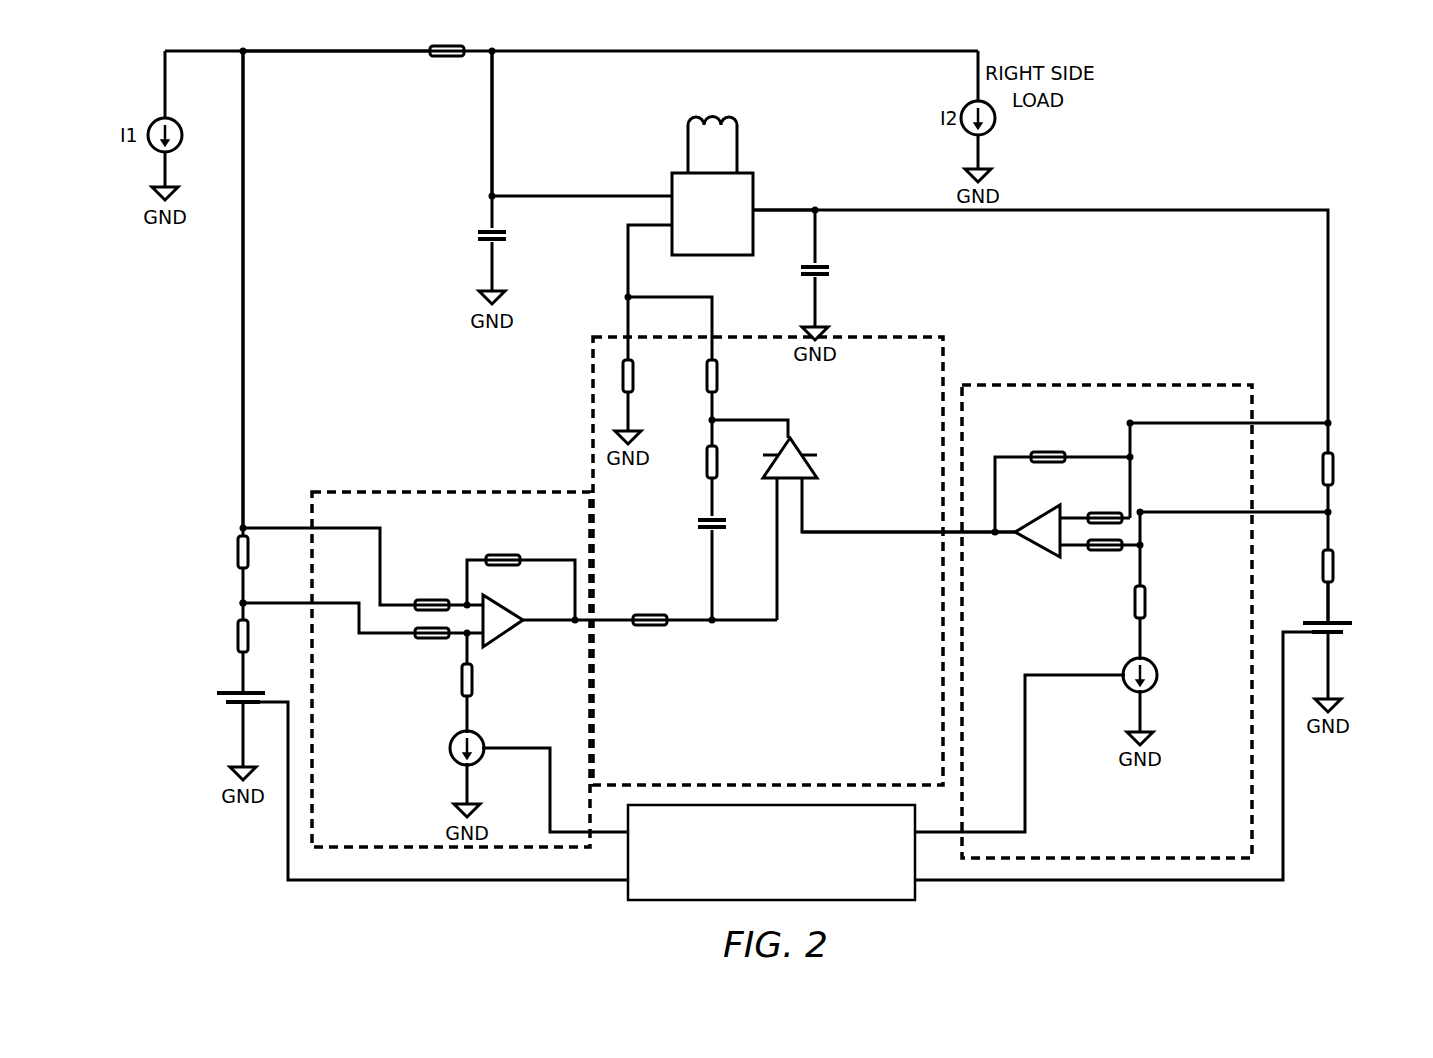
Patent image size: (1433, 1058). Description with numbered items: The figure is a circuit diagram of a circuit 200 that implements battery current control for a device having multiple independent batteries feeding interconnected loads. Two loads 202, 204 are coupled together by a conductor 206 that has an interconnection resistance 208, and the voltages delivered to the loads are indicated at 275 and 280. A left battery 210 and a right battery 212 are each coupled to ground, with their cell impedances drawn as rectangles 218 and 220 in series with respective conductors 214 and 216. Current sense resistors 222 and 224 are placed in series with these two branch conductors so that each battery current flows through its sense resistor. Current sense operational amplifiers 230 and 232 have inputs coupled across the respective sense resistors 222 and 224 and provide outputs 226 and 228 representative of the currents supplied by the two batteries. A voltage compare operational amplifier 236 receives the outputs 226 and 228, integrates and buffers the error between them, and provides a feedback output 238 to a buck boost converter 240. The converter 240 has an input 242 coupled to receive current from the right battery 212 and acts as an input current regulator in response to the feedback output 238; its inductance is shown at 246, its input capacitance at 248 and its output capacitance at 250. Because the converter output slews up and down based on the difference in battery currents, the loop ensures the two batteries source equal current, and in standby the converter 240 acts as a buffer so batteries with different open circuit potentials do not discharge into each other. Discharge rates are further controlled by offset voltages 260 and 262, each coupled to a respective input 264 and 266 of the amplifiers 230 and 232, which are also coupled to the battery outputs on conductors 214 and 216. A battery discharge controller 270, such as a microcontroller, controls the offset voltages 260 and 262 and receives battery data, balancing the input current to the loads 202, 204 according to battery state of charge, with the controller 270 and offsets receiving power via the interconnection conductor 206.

The circuit 200 is at (1295, 105).
The load 202 is at (152, 122).
The load 204 is at (997, 118).
The conductor 206 is at (378, 56).
The interconnection resistance 208 is at (446, 58).
The left battery 210 is at (234, 704).
The right battery 212 is at (1343, 627).
The conductor 214 is at (240, 588).
The conductor 216 is at (1333, 603).
The cell impedance 218 is at (249, 635).
The cell impedance 220 is at (1334, 560).
The current sense resistor 222 is at (240, 545).
The current sense resistor 224 is at (1334, 465).
The output 226 is at (730, 623).
The output 228 is at (858, 531).
The current sense operational amplifier 230 is at (498, 641).
The current sense operational amplifier 232 is at (1043, 560).
The voltage compare operational amplifier 236 is at (812, 470).
The feedback output 238 is at (745, 419).
The buck boost converter 240 is at (754, 174).
The input 242 is at (754, 212).
The inductance 246 is at (737, 112).
The input capacitance 248 is at (819, 265).
The output capacitance 250 is at (497, 245).
The offset voltage 260 is at (480, 735).
The offset voltage 262 is at (1158, 677).
The input 264 is at (464, 637).
The input 266 is at (1135, 550).
The battery discharge controller 270 is at (905, 901).
The voltage provided to load 275 is at (242, 58).
The voltage provided to load 280 is at (494, 58).